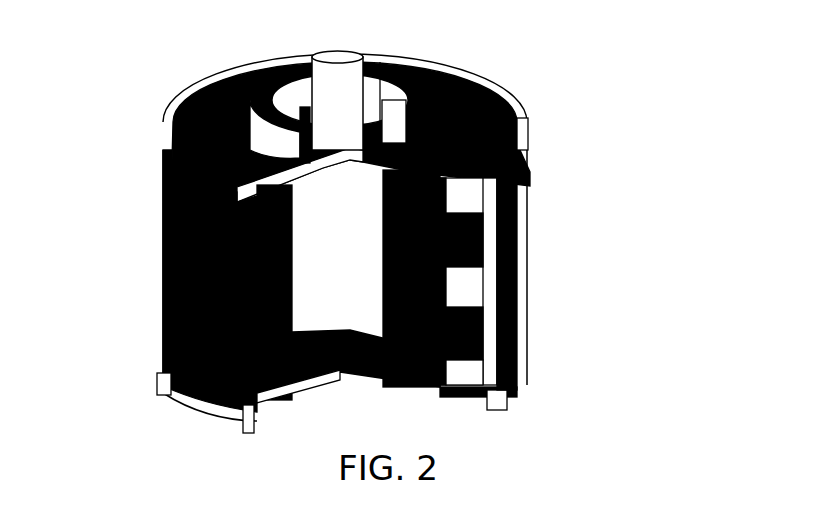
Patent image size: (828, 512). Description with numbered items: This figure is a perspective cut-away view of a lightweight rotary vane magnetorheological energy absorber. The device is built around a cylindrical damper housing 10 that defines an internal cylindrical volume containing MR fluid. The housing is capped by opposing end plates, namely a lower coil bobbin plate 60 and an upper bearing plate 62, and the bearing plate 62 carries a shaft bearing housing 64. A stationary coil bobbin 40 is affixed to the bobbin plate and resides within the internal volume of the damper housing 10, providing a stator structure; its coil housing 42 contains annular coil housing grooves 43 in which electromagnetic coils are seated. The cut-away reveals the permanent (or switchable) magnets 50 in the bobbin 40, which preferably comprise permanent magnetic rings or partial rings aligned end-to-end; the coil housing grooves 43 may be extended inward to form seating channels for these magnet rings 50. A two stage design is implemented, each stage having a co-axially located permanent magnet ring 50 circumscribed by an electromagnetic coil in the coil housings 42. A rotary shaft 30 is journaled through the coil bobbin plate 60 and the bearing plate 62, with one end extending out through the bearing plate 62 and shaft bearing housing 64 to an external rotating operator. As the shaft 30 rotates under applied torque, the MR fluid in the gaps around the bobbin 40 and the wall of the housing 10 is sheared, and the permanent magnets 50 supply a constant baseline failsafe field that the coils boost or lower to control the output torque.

The cylindrical damper housing 10 is at (163, 278).
The rotary shaft 30 is at (387, 80).
The coil bobbin 40 is at (455, 371).
The coil housing 42 is at (541, 254).
The coil housing groove 43 is at (485, 321).
The permanent magnet 50 is at (470, 217).
The coil bobbin plate 60 is at (185, 404).
The bearing plate 62 is at (187, 127).
The shaft bearing housing 64 is at (287, 140).